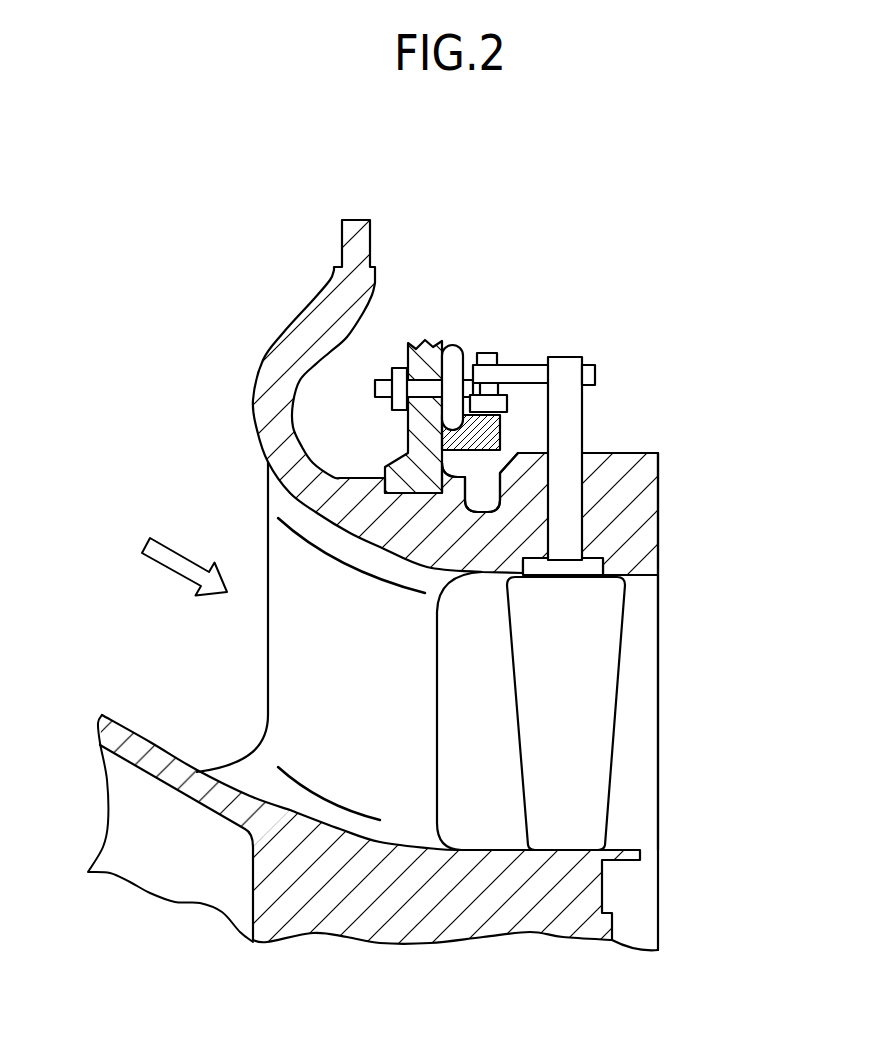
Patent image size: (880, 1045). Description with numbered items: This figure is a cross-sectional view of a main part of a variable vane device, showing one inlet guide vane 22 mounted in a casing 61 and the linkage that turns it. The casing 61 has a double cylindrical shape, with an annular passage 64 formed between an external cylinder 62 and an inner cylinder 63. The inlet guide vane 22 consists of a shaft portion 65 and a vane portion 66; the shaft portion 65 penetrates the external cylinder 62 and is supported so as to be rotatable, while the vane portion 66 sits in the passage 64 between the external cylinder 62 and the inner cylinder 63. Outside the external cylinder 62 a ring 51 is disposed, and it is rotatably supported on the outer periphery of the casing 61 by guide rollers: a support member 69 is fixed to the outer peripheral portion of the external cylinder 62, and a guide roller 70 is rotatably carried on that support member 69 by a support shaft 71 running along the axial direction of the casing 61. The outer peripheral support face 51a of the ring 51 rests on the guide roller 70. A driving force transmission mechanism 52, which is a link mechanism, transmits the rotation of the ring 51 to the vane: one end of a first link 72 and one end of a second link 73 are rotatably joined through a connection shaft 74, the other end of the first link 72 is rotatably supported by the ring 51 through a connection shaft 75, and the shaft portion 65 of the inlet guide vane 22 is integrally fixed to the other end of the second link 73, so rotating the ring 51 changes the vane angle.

The inlet guide vane 22 is at (625, 625).
The ring 51 is at (505, 432).
The outer peripheral support face 51a is at (267, 462).
The driving force transmission mechanism 52 is at (437, 351).
The casing 61 is at (659, 477).
The external cylinder 62 is at (637, 526).
The inner cylinder 63 is at (583, 885).
The annular passage 64 is at (635, 730).
The shaft portion 65 is at (567, 418).
The vane portion 66 is at (562, 812).
The support member 69 is at (430, 352).
The guide roller 70 is at (453, 353).
The support shaft 71 is at (375, 387).
The first link 72 is at (489, 352).
The second link 73 is at (590, 374).
The connection shaft 74 is at (486, 396).
The connection shaft 75 is at (462, 490).